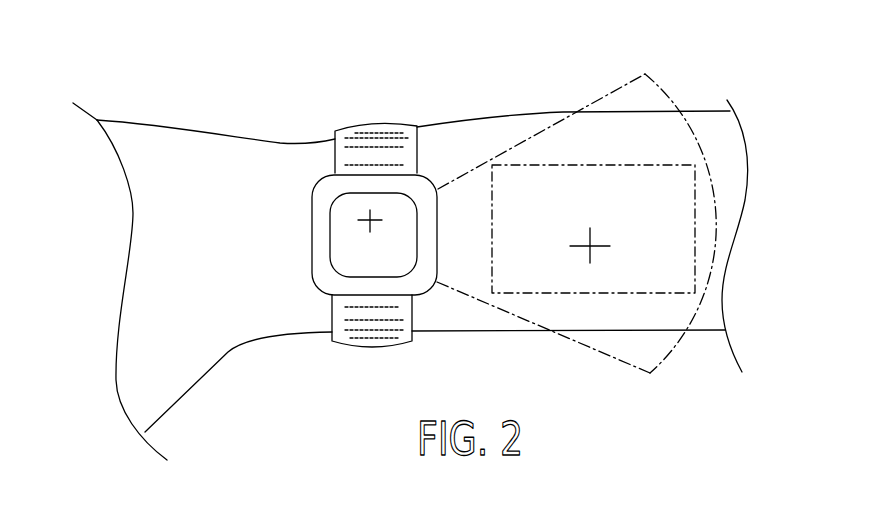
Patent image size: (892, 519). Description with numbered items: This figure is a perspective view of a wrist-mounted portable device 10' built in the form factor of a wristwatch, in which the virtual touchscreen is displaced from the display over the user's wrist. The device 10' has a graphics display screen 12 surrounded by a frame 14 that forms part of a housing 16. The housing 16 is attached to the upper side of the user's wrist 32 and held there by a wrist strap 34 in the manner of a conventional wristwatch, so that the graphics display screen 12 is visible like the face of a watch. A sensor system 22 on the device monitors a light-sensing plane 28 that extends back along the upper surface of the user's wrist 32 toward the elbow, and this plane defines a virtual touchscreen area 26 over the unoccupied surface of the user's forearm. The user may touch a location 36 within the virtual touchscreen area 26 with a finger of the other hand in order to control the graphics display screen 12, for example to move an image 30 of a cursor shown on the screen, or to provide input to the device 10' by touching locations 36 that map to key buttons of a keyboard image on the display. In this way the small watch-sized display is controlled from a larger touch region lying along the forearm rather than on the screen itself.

The device 10' is at (387, 231).
The graphics display screen 12 is at (347, 259).
The frame 14 is at (312, 236).
The housing 16 is at (432, 150).
The sensor system 22 is at (436, 300).
The virtual touchscreen area 26 is at (692, 260).
The light-sensing plane 28 is at (672, 140).
The image of a cursor 30 is at (375, 219).
The user's wrist 32 is at (250, 328).
The wrist strap 34 is at (375, 334).
The location 36 is at (598, 243).